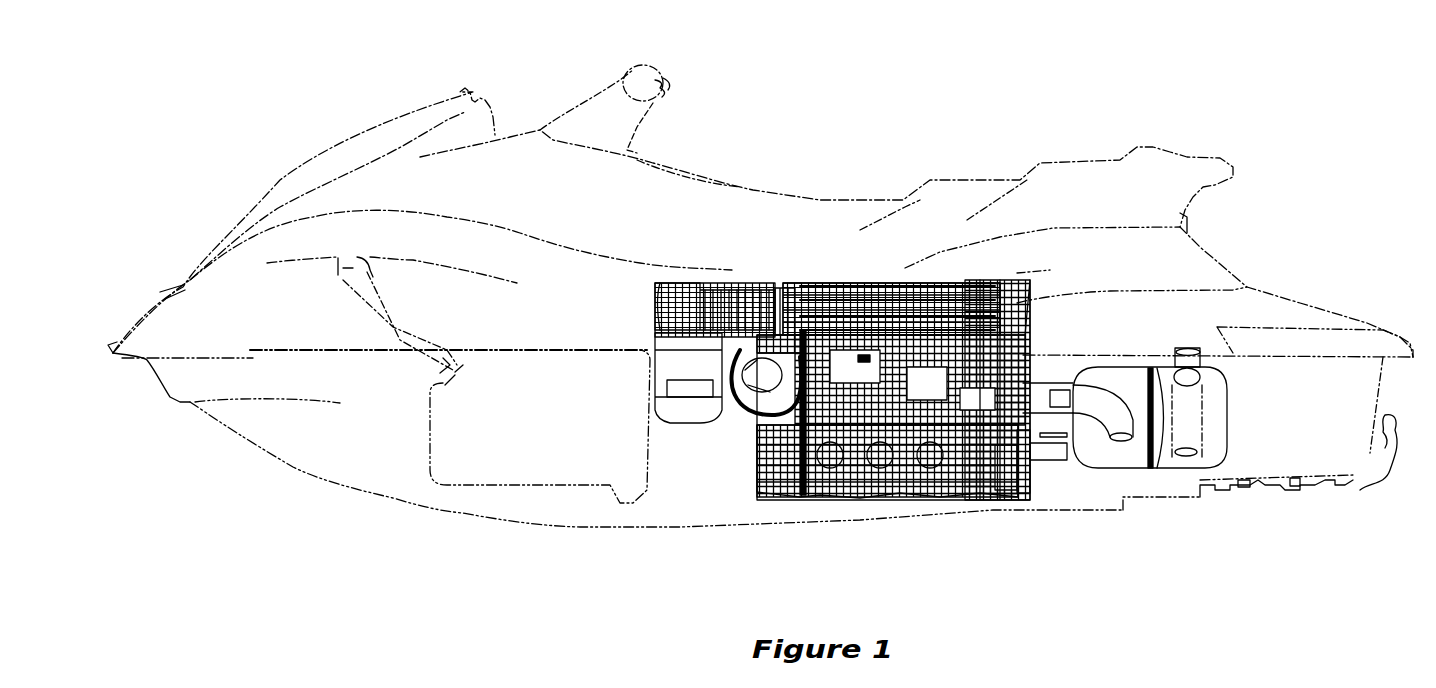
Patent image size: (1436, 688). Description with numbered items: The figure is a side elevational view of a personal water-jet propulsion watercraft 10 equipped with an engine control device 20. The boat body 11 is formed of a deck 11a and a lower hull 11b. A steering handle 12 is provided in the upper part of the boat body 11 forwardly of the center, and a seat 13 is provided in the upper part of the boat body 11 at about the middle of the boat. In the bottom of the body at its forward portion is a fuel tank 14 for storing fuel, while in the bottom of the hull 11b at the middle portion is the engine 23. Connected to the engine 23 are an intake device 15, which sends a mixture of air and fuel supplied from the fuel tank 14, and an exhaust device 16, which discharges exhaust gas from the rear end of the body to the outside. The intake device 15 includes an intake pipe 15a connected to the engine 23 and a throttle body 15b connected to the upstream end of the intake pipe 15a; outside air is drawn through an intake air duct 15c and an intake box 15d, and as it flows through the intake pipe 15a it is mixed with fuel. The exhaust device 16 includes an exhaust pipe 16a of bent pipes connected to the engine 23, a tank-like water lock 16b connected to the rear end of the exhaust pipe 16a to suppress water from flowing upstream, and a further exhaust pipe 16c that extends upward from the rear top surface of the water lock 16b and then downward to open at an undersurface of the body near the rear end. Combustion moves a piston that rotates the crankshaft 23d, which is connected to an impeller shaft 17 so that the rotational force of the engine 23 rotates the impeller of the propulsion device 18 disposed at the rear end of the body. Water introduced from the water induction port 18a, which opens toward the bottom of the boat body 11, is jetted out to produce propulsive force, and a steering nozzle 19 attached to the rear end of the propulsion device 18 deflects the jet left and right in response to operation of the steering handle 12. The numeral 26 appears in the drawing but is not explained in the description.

The personal water-jet propulsion watercraft 10 is at (913, 47).
The boat body 11 is at (92, 283).
The deck 11a is at (158, 292).
The lower hull 11b is at (150, 366).
The steering handle 12 is at (684, 76).
The seat 13 is at (880, 193).
The fuel tank 14 is at (473, 477).
The intake device 15 is at (746, 271).
The intake pipe 15a is at (863, 310).
The throttle body 15b is at (773, 297).
The intake air duct 15c is at (413, 310).
The intake box 15d is at (650, 363).
The exhaust device 16 is at (998, 429).
The exhaust pipe 16a is at (747, 373).
The water lock 16b is at (1123, 377).
The exhaust pipe 16c is at (1200, 363).
The impeller shaft 17 is at (1050, 463).
The propulsion device 18 is at (1280, 500).
The water induction port 18a is at (1160, 503).
The steering nozzle 19 is at (1363, 493).
The engine control device 20 is at (903, 392).
The engine 23 is at (857, 497).
The crankshaft 23d is at (1022, 430).
The cylinder head 26 is at (827, 293).